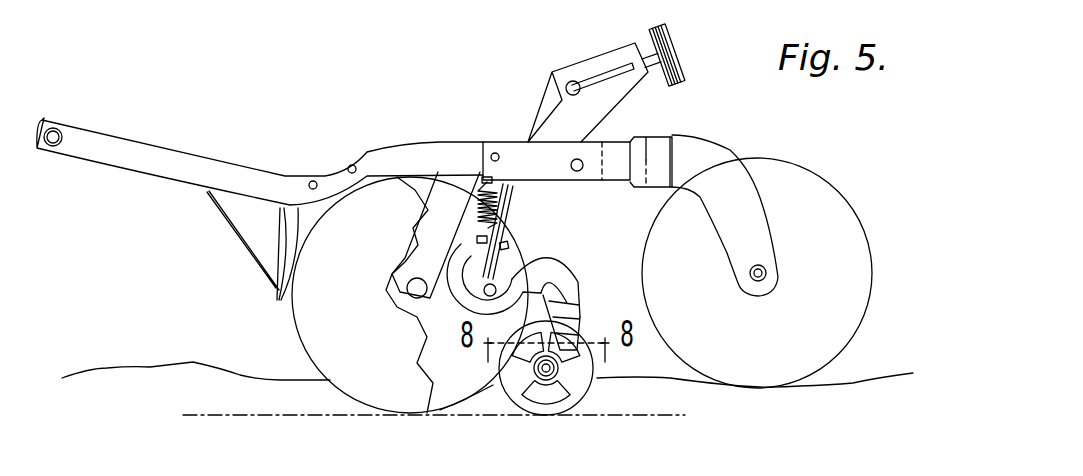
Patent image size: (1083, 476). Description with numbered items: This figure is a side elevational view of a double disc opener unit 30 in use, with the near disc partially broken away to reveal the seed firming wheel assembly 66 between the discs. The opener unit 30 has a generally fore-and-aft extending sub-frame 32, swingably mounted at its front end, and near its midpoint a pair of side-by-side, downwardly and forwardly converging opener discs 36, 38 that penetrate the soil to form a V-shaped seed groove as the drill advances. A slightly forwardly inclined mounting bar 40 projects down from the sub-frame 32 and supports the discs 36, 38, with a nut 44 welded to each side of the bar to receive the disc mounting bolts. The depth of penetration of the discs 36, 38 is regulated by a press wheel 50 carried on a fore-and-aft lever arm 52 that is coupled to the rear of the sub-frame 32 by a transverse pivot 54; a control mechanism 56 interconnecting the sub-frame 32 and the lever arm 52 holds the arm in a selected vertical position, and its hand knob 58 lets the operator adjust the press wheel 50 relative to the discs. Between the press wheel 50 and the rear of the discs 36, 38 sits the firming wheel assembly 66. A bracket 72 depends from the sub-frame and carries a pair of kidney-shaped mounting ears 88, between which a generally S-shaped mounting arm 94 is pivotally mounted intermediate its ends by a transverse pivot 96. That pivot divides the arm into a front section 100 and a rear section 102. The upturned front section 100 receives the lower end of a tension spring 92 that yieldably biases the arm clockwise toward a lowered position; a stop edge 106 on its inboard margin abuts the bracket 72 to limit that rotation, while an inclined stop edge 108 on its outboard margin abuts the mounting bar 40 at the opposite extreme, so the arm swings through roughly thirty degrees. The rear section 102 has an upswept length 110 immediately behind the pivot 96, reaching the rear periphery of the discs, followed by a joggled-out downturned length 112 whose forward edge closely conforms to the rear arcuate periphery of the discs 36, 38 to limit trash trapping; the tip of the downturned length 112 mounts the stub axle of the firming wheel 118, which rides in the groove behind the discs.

The opener unit 30 is at (420, 83).
The sub-frame 32 is at (153, 158).
The opener disc 36 is at (318, 312).
The opener disc 38 is at (480, 385).
The mounting bar 40 is at (458, 175).
The nut 44 is at (408, 297).
The press wheel 50 is at (828, 210).
The lever arm 52 is at (697, 157).
The transverse pivot 54 is at (494, 152).
The control mechanism 56 is at (565, 67).
The hand knob 58 is at (680, 50).
The seed firming wheel assembly 66 is at (595, 270).
The bracket 72 is at (502, 200).
The kidney-shaped mounting ear 88 is at (473, 280).
The tension spring 92 is at (497, 188).
The mounting arm 94 is at (577, 268).
The transverse pivot 96 is at (496, 291).
The front section 100 is at (462, 253).
The rear section 102 is at (595, 317).
The stop edge 106 is at (510, 237).
The stop edge 108 is at (436, 235).
The upswept length 110 is at (556, 270).
The downturned length 112 is at (568, 306).
The firming wheel 118 is at (583, 390).